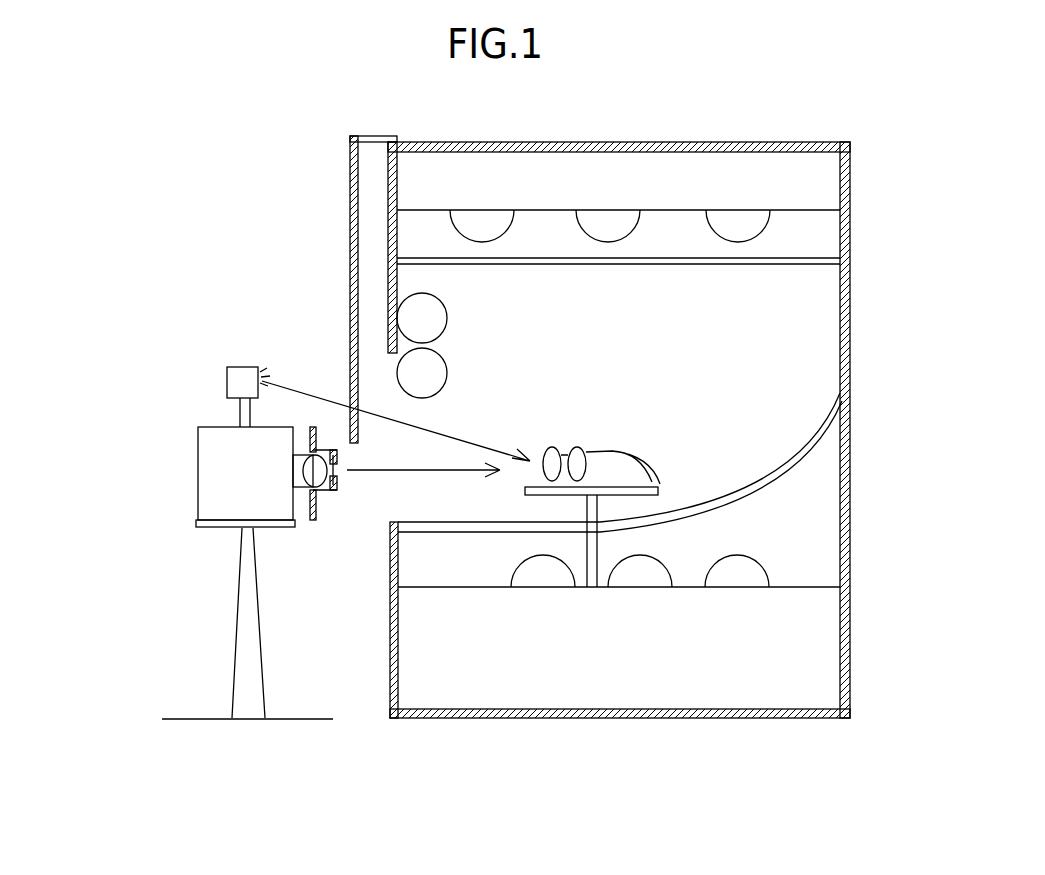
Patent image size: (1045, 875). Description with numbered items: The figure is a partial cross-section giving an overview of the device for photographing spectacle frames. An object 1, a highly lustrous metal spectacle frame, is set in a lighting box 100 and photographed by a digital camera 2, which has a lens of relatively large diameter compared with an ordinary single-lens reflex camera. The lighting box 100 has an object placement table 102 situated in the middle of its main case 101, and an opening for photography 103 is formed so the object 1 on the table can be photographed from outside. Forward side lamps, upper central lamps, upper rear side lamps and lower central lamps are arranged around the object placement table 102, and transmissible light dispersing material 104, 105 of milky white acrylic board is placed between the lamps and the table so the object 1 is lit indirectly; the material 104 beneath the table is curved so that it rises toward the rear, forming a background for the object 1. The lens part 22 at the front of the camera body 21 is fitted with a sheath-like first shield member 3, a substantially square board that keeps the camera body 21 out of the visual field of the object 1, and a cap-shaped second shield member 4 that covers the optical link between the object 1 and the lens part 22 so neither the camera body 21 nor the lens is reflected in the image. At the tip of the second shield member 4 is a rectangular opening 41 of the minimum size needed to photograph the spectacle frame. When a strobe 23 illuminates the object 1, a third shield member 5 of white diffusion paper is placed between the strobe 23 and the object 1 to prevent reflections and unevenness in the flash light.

The object 1 is at (590, 431).
The digital camera 2 is at (194, 509).
The first shield member 3 is at (312, 427).
The second shield member 4 is at (476, 629).
The third shield member 5 is at (350, 192).
The camera body 21 is at (198, 507).
The lens part 22 is at (308, 488).
The strobe 23 is at (237, 367).
The opening 41 is at (340, 467).
The lighting box 100 is at (655, 475).
The main case 101 is at (850, 343).
The object placement table 102 is at (662, 492).
The opening for photography 103 is at (426, 416).
The transmissible light dispersing material 104 is at (778, 480).
The transmissible light dispersing material 105 is at (753, 266).